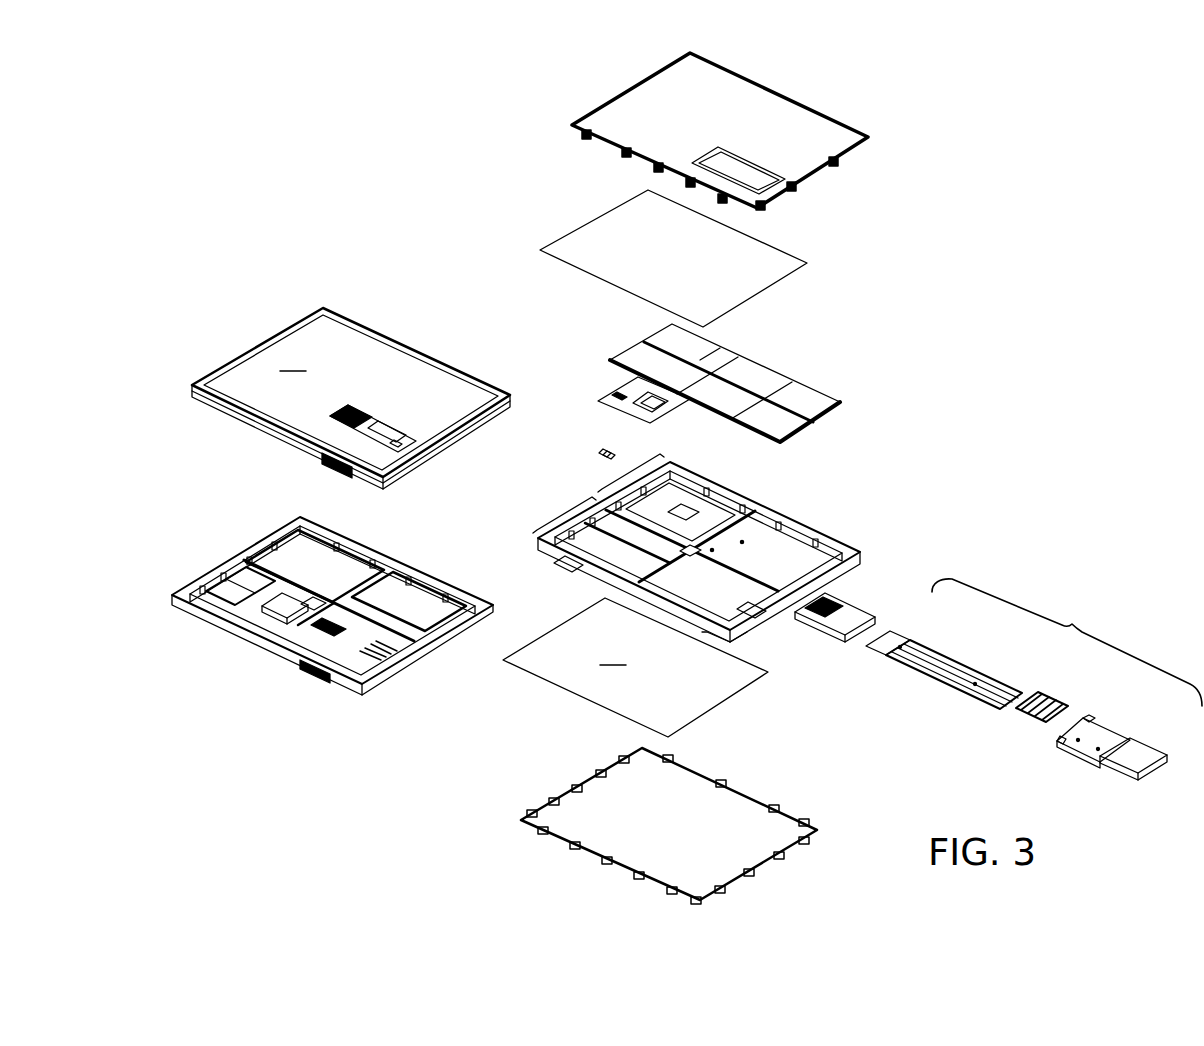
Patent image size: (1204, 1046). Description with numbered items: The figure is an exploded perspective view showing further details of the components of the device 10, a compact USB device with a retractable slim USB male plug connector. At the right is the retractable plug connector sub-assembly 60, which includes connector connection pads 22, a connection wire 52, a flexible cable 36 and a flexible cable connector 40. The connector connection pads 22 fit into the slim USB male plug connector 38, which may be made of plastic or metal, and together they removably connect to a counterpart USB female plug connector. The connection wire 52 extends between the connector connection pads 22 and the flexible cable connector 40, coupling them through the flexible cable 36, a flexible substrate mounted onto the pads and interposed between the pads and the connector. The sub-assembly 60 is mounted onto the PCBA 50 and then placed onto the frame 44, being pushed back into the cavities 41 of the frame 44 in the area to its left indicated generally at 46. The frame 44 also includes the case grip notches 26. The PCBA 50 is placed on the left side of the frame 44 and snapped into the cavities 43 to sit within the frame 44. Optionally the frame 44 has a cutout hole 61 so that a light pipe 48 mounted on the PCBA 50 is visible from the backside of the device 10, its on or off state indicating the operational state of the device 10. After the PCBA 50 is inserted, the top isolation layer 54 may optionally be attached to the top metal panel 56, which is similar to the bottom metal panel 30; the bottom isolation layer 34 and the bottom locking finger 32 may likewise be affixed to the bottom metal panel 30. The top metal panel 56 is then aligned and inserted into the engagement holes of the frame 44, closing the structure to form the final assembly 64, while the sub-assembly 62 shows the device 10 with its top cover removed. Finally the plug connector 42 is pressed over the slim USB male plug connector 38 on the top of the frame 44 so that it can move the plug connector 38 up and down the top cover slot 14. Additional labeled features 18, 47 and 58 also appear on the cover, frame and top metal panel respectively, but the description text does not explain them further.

The device 10 is at (200, 311).
The top cover slot 14 is at (395, 440).
The opening 18 is at (355, 425).
The connector connection pads 22 is at (1054, 709).
The case grip notches 26 is at (740, 642).
The bottom metal panel 30 is at (645, 845).
The locking finger 32 is at (669, 826).
The bottom isolation layer 34 is at (635, 667).
The flexible cable 36 is at (945, 665).
The slim USB male plug connector 38 is at (1152, 746).
The flexible cable connector 40 is at (898, 642).
The cavities 41 is at (570, 562).
The plug connector 42 is at (848, 601).
The cavities 43 is at (718, 498).
The frame 44 is at (706, 562).
The area to the left of the frame 46 is at (560, 511).
The bracket 47 is at (634, 478).
The light pipe 48 is at (605, 451).
The PCBA 50 is at (717, 391).
The connection wire 52 is at (1006, 696).
The top isolation layer 54 is at (586, 218).
The top metal panel 56 is at (735, 139).
The clips 58 is at (846, 167).
The sub-assembly 60 is at (1072, 624).
The cutout hole 61 is at (672, 497).
The sub-assembly 62 is at (180, 650).
The final assembly 64 is at (351, 398).